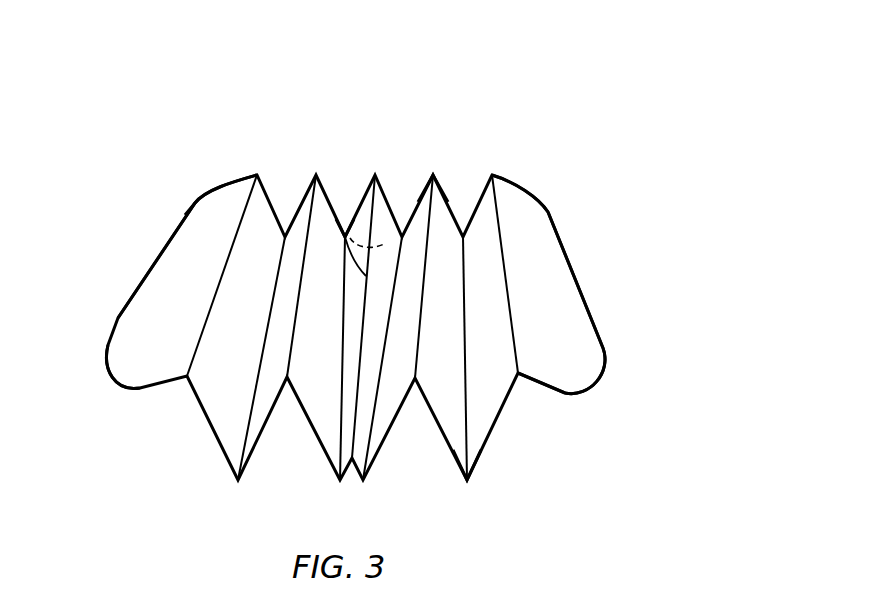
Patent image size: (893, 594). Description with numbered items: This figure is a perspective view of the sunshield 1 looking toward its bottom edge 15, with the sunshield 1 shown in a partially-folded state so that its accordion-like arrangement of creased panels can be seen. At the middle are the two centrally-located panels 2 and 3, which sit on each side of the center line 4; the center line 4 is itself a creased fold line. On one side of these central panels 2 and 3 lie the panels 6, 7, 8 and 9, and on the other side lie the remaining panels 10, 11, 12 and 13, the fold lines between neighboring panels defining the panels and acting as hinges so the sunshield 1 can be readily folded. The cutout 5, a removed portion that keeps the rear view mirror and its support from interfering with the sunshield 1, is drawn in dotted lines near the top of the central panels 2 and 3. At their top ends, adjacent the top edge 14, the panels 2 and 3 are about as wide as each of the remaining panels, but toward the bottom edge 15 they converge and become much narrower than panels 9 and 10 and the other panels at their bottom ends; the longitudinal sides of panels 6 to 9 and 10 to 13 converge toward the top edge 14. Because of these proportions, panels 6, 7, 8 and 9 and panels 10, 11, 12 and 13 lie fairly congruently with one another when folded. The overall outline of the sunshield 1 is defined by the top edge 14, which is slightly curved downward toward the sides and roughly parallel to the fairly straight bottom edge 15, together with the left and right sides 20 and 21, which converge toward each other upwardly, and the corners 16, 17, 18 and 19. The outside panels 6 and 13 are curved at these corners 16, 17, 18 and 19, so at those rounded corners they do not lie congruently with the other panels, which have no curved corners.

The sunshield 1 is at (328, 68).
The central panel 2 is at (362, 296).
The central panel 3 is at (392, 296).
The center line 4 is at (345, 237).
The cutout 5 is at (386, 236).
The panel 6 is at (169, 338).
The panel 7 is at (243, 338).
The panel 8 is at (291, 338).
The panel 9 is at (325, 338).
The panel 10 is at (416, 345).
The panel 11 is at (458, 345).
The panel 12 is at (504, 345).
The panel 13 is at (566, 345).
The top edge 14 is at (452, 166).
The bottom edge 15 is at (472, 487).
The corner 16 is at (108, 370).
The corner 17 is at (602, 383).
The corner 18 is at (203, 193).
The corner 19 is at (548, 212).
The left side 20 is at (160, 253).
The right side 21 is at (577, 267).